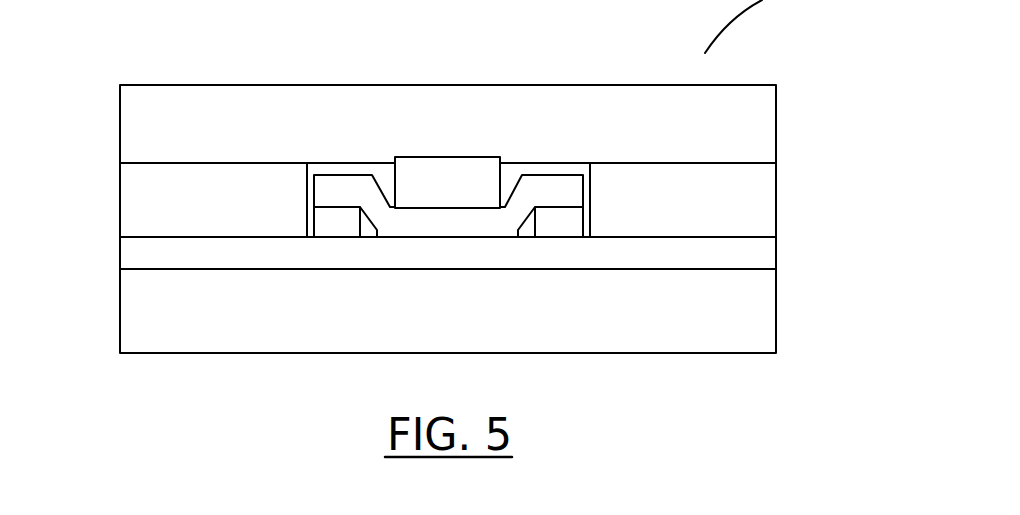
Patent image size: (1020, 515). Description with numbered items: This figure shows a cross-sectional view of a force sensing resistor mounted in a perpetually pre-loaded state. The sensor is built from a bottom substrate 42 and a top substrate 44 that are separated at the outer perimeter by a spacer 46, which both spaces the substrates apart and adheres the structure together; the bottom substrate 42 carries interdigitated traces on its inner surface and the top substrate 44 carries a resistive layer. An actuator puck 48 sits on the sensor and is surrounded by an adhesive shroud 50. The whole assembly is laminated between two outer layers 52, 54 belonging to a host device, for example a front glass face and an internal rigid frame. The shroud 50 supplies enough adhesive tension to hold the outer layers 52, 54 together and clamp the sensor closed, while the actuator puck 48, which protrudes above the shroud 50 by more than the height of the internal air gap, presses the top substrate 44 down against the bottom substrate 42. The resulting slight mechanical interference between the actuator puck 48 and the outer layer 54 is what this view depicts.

The bottom substrate 42 is at (763, 254).
The top substrate 44 is at (333, 188).
The spacer 46 is at (546, 229).
The actuator puck 48 is at (436, 195).
The adhesive shroud 50 is at (763, 207).
The outer layer 52 is at (763, 309).
The outer layer 54 is at (766, 100).